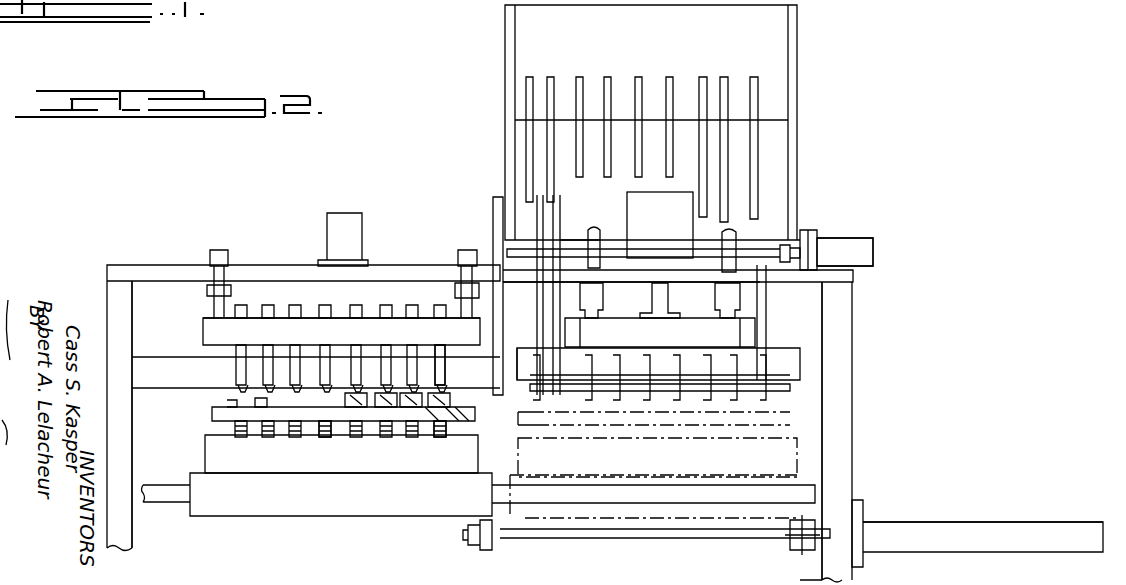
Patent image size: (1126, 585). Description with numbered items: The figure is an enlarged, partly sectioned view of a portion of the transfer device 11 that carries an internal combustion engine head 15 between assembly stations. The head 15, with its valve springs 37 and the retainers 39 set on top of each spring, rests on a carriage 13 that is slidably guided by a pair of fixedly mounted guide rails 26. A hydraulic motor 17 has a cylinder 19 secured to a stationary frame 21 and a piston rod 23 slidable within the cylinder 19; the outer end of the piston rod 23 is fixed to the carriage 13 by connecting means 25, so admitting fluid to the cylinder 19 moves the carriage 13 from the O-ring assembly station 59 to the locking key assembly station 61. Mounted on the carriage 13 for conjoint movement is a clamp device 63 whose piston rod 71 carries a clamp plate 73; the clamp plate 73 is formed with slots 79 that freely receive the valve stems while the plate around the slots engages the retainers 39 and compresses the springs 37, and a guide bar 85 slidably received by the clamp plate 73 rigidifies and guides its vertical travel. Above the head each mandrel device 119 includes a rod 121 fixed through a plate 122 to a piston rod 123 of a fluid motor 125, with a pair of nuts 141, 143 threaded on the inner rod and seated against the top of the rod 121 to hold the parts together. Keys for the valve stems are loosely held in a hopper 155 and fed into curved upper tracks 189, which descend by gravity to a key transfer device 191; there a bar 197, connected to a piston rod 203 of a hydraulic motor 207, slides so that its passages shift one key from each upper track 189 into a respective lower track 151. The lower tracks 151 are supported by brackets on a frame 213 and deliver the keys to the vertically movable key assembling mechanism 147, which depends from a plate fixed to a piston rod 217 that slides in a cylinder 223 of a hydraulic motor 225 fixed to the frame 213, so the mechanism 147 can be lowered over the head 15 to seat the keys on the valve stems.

The transfer device 11 is at (940, 442).
The carriage 13 is at (205, 478).
The internal combustion engine head 15 is at (815, 450).
The hydraulic motor 17 is at (1000, 516).
The cylinder 19 is at (902, 522).
The stationary frame 21 is at (840, 360).
The piston rod 23 is at (697, 540).
The connecting means 25 is at (497, 548).
The guide rails 26 is at (170, 502).
The springs 37 is at (250, 435).
The retainers 39 is at (440, 437).
The O-ring assembly station 59 is at (188, 338).
The locking key assembly station 61 is at (824, 421).
The clamp device 63 is at (199, 418).
The piston rod 71 is at (323, 437).
The clamp plate 73 is at (218, 400).
The slots 79 is at (470, 390).
The guide bar 85 is at (265, 407).
The mandrel device 119 is at (455, 358).
The rod 121 is at (290, 337).
The plate 122 is at (311, 322).
The piston rod 123 is at (355, 285).
The fluid motor 125 is at (328, 218).
The nut 141 is at (415, 300).
The nut 143 is at (424, 350).
The key assembling mechanism 147 is at (822, 354).
The lower tracks 151 is at (713, 442).
The hopper 155 is at (815, 45).
The upper tracks 189 is at (752, 77).
The key transfer device 191 is at (885, 236).
The bar 197 is at (625, 258).
The piston rod 203 is at (803, 232).
The hydraulic motor 207 is at (892, 258).
The frame 213 is at (855, 285).
The piston rod 217 is at (670, 317).
The cylinder 223 is at (680, 226).
The hydraulic motor 225 is at (615, 220).